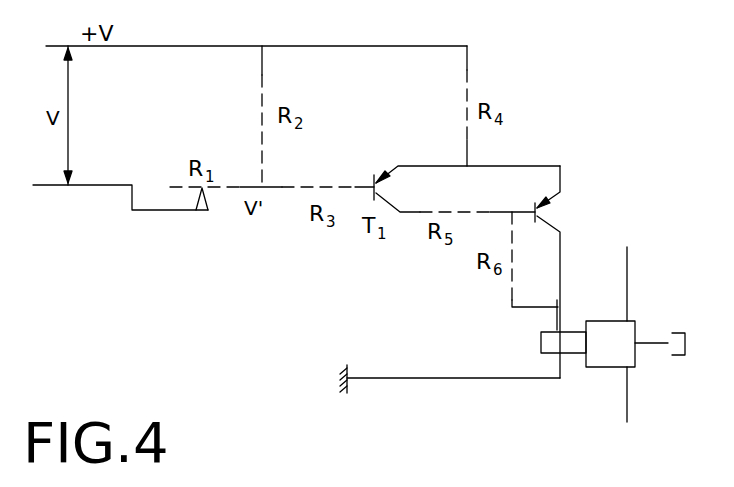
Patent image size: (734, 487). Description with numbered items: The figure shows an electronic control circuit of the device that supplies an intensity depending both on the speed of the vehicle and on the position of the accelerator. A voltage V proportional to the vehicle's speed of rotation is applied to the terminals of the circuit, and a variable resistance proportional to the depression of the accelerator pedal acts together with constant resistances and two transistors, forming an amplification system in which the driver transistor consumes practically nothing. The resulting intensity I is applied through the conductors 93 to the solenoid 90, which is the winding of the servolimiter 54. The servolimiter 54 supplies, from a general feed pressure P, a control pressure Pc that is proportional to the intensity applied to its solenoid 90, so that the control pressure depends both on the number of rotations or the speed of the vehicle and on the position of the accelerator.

The servolimiter 54 is at (601, 368).
The solenoid 90 is at (541, 340).
The conductors 93 is at (557, 314).